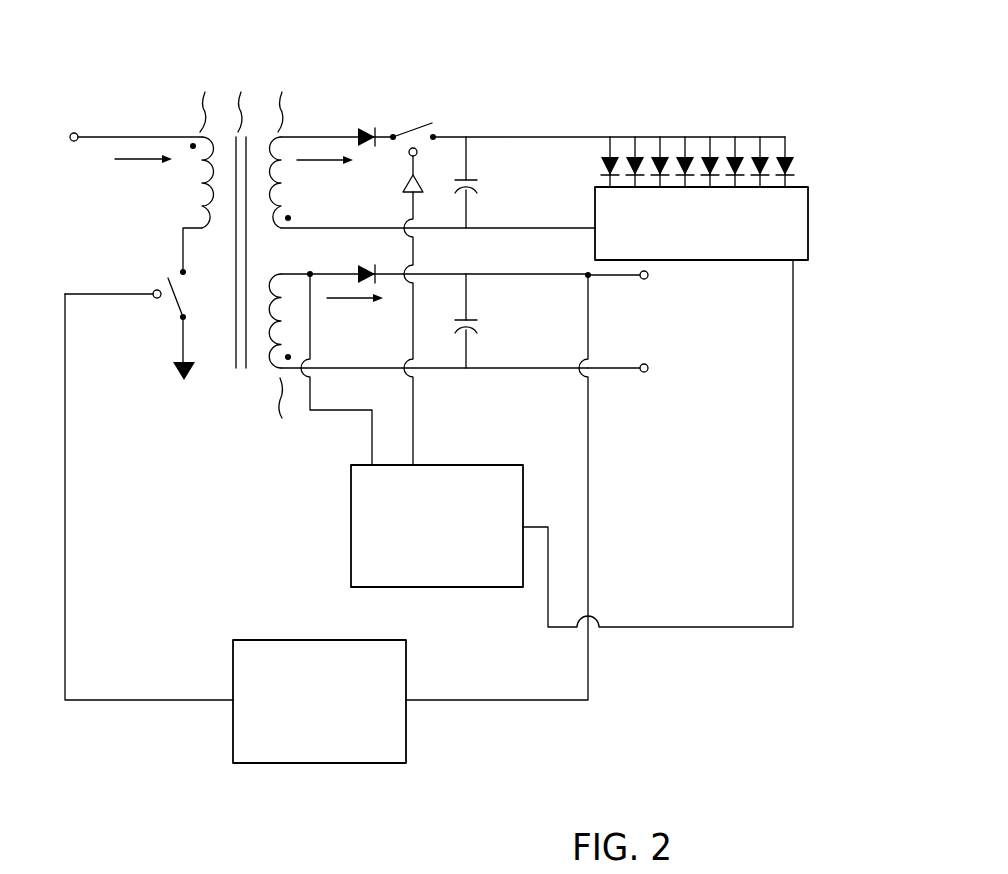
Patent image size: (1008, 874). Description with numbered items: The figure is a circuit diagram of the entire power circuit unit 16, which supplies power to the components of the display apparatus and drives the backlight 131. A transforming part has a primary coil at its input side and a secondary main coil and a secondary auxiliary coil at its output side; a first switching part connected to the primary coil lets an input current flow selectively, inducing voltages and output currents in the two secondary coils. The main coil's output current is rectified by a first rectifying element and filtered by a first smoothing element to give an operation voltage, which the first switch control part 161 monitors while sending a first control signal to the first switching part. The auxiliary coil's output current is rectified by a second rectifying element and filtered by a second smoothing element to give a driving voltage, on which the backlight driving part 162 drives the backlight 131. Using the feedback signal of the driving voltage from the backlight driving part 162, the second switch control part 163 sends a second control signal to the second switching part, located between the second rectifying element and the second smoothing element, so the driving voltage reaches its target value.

The power circuit unit 16 is at (523, 71).
The backlight 131 is at (793, 160).
The backlight driving part 162 is at (808, 222).
The second switch control part 163 is at (351, 527).
The first switch control part 161 is at (322, 763).